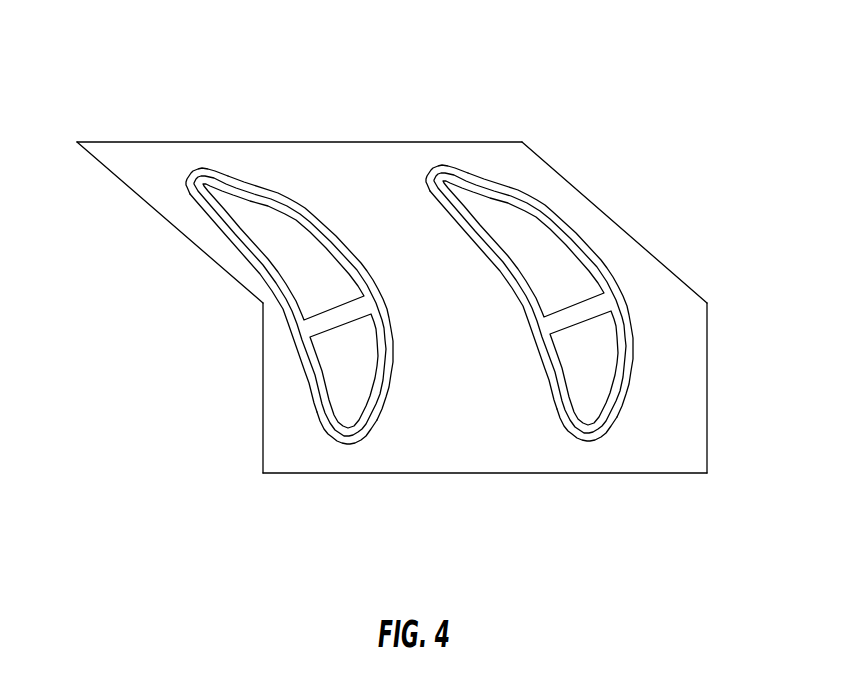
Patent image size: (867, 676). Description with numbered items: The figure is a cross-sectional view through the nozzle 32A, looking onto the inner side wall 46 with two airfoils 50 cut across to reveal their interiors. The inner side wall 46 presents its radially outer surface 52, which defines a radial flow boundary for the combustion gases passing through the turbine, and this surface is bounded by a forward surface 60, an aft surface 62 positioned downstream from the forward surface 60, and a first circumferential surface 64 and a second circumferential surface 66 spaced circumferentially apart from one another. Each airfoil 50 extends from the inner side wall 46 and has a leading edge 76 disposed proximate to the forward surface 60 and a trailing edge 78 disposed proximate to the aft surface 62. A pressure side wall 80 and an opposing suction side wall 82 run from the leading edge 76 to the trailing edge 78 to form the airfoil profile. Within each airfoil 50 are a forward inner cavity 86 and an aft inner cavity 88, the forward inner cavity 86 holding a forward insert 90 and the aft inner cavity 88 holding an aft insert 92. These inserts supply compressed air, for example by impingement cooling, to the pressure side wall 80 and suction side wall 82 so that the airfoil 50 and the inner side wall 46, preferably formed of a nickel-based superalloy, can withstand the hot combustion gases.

The vane arc segment 32A is at (198, 77).
The inner side wall 46 is at (685, 228).
The airfoil 50 is at (483, 282).
The radially outer surface 52 is at (372, 197).
The forward surface 60 is at (678, 474).
The aft surface 62 is at (120, 142).
The first circumferential surface 64 is at (126, 185).
The second circumferential surface 66 is at (708, 420).
The leading edge 76 is at (348, 444).
The trailing edge 78 is at (194, 170).
The pressure side wall 80 is at (247, 257).
The suction side wall 82 is at (388, 390).
The forward inner cavity 86 is at (383, 333).
The aft inner cavity 88 is at (262, 193).
The forward insert 90 is at (350, 377).
The aft insert 92 is at (293, 232).